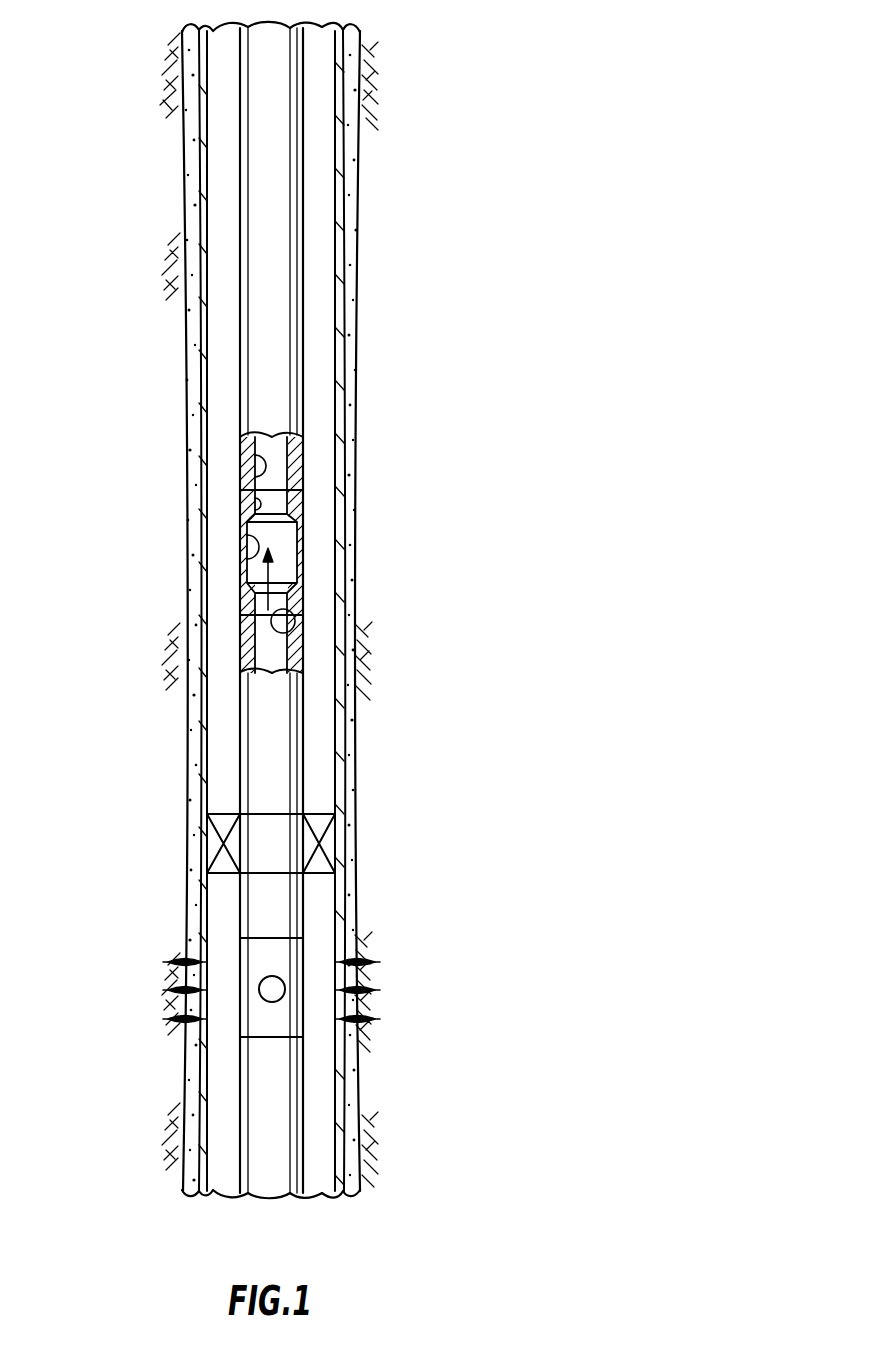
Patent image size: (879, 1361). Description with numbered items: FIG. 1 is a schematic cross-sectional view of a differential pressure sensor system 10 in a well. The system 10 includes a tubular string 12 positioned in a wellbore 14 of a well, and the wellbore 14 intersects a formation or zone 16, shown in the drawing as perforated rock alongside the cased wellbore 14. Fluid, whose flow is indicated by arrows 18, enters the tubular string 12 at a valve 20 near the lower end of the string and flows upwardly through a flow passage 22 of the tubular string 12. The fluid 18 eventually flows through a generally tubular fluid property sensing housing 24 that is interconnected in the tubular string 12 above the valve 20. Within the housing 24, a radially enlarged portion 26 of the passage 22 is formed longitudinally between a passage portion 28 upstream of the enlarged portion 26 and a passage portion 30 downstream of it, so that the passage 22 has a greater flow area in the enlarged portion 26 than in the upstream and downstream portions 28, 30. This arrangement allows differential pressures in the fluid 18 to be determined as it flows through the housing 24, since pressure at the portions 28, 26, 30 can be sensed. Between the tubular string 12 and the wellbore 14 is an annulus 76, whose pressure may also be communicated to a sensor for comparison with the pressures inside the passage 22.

The system 10 is at (506, 80).
The tubular string 12 is at (310, 296).
The wellbore 14 is at (207, 215).
The formation or zone 16 is at (380, 971).
The fluid 18 is at (274, 573).
The valve 20 is at (238, 955).
The flow passage 22 is at (258, 455).
The fluid property sensing housing 24 is at (312, 501).
The radially enlarged portion 26 is at (250, 566).
The upstream passage portion 28 is at (283, 633).
The downstream passage portion 30 is at (258, 508).
The annulus 76 is at (320, 403).